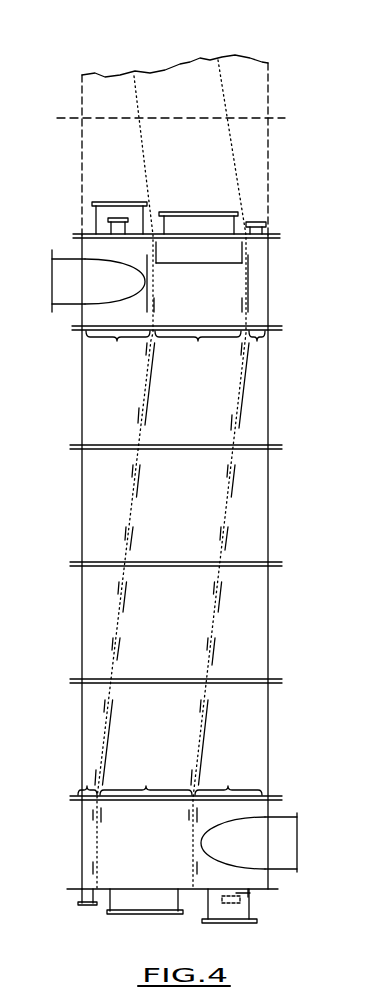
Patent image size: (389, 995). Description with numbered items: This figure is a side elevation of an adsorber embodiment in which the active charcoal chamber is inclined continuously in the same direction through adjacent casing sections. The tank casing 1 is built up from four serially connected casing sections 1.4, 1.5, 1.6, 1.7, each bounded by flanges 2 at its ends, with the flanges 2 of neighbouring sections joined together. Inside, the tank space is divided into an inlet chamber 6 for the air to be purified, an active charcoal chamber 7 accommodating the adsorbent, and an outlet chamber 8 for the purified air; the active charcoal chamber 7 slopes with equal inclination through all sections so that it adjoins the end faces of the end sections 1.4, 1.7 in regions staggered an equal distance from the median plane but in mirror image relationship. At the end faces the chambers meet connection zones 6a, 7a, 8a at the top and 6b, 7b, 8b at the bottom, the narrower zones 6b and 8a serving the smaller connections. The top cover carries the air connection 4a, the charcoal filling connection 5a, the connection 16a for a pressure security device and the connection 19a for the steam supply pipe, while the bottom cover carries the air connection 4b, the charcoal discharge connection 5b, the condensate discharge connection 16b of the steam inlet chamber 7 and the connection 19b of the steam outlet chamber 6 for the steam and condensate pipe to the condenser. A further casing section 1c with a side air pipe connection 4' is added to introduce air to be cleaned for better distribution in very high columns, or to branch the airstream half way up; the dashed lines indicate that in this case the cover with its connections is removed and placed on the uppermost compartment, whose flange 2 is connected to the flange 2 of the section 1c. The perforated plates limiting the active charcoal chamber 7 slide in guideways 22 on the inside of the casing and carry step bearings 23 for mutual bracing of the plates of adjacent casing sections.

The tank casing 1 is at (287, 391).
The casing section with side air pipe connection 1c is at (262, 288).
The casing section 1.4 is at (82, 385).
The casing section 1.5 is at (82, 492).
The casing section 1.6 is at (82, 618).
The casing section 1.7 is at (82, 735).
The flange 2 is at (70, 118).
The side air pipe connection 4' is at (176, 561).
The air connection 4a is at (110, 219).
The air connection 4b is at (240, 915).
The active charcoal connection 5a is at (198, 221).
The active charcoal connection 5b is at (138, 905).
The inlet chamber 6 is at (93, 514).
The connection zone of inlet chamber 6a is at (118, 350).
The connection zone of inlet chamber 6b is at (78, 790).
The active charcoal chamber 7 is at (207, 517).
The connection zone of active charcoal chamber 7a is at (198, 350).
The connection zone of active charcoal chamber 7b is at (146, 777).
The outlet chamber 8 is at (253, 607).
The connection zone of outlet chamber 8a is at (260, 345).
The connection zone of outlet chamber 8b is at (228, 777).
The connection for pressure security device 16a is at (121, 213).
The condensate discharge connection 16b is at (250, 897).
The steam supply connection 19a is at (265, 233).
The steam and condensate connection 19b is at (78, 896).
The guideway 22 is at (210, 642).
The step bearing 23 is at (232, 477).